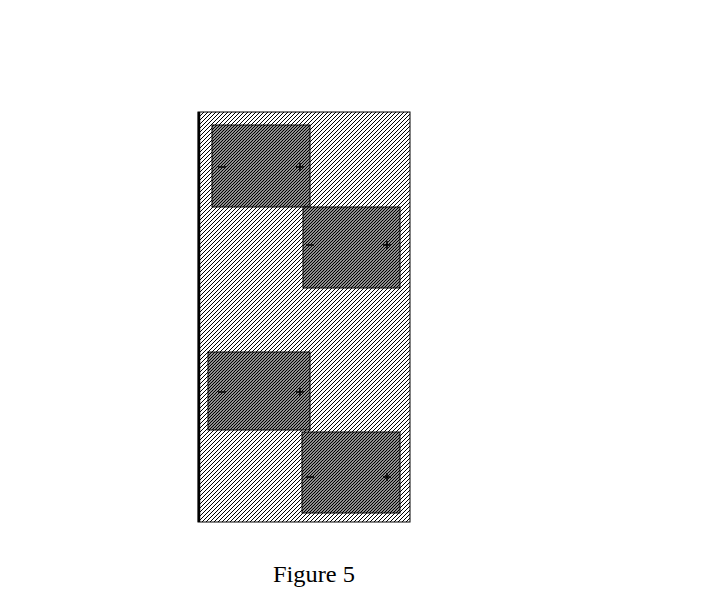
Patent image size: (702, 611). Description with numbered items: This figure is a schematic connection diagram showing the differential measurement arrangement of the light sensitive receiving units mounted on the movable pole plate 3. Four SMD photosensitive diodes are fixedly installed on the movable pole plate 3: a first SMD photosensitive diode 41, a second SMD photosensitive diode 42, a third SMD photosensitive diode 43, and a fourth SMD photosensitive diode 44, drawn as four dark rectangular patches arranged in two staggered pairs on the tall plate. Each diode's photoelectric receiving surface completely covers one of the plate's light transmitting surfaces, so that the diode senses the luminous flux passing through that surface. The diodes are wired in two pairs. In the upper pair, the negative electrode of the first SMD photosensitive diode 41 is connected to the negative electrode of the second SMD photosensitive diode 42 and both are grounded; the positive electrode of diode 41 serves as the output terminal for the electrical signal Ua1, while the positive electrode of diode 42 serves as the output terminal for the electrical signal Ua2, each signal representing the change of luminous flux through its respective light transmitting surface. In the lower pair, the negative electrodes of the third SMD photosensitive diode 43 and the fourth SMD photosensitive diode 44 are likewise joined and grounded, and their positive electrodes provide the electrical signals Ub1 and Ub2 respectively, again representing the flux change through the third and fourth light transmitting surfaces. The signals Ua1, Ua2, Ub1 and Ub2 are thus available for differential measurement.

The movable pole plate 3 is at (226, 248).
The first SMD photosensitive diode 41 is at (256, 128).
The second SMD photosensitive diode 42 is at (360, 218).
The third SMD photosensitive diode 43 is at (300, 470).
The fourth SMD photosensitive diode 44 is at (402, 496).
The electrical signal Ua1 is at (300, 165).
The electrical signal Ua2 is at (388, 242).
The electrical signal Ub1 is at (300, 392).
The electrical signal Ub2 is at (388, 475).